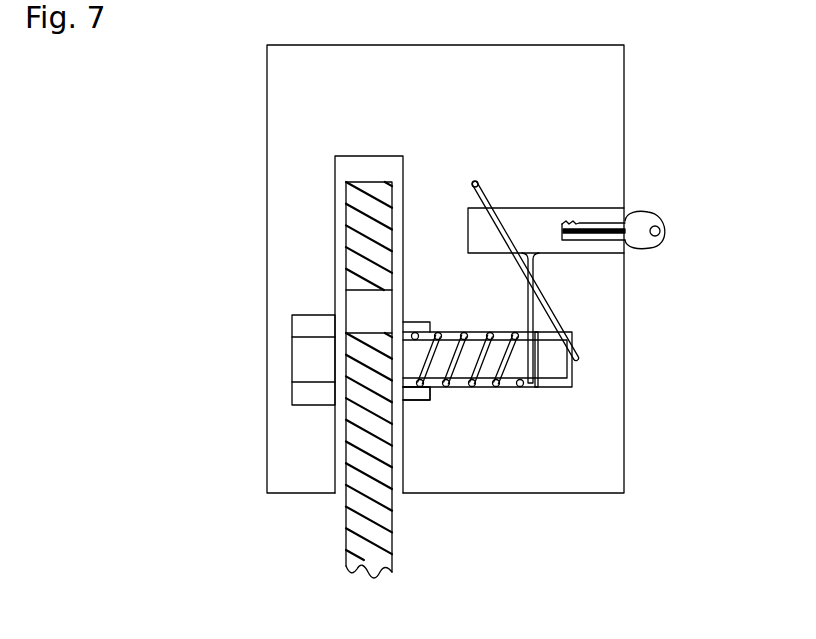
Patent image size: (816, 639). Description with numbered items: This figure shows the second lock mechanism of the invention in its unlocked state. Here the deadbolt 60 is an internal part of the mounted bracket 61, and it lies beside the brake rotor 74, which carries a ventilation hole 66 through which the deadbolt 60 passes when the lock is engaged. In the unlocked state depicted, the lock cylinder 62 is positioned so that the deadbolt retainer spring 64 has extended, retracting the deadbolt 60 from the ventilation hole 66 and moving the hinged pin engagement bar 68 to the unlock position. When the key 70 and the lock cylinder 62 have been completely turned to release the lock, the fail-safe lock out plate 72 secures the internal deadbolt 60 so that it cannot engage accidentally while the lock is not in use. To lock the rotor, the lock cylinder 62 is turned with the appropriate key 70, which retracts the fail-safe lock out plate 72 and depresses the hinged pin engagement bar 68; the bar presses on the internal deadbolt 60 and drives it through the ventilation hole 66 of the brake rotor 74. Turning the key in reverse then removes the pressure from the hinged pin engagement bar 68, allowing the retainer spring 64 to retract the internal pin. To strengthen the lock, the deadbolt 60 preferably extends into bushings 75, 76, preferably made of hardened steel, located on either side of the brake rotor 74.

The deadbolt 60 is at (548, 363).
The mounted bracket 61 is at (483, 122).
The lock cylinder 62 is at (593, 215).
The deadbolt retainer spring 64 is at (473, 387).
The ventilation hole 66 is at (363, 310).
The hinged pin engagement bar 68 is at (556, 318).
The key 70 is at (667, 227).
The fail-safe lock out plate 72 is at (530, 313).
The brake rotor 74 is at (370, 538).
The bushing 75 is at (413, 392).
The bushing 76 is at (302, 323).